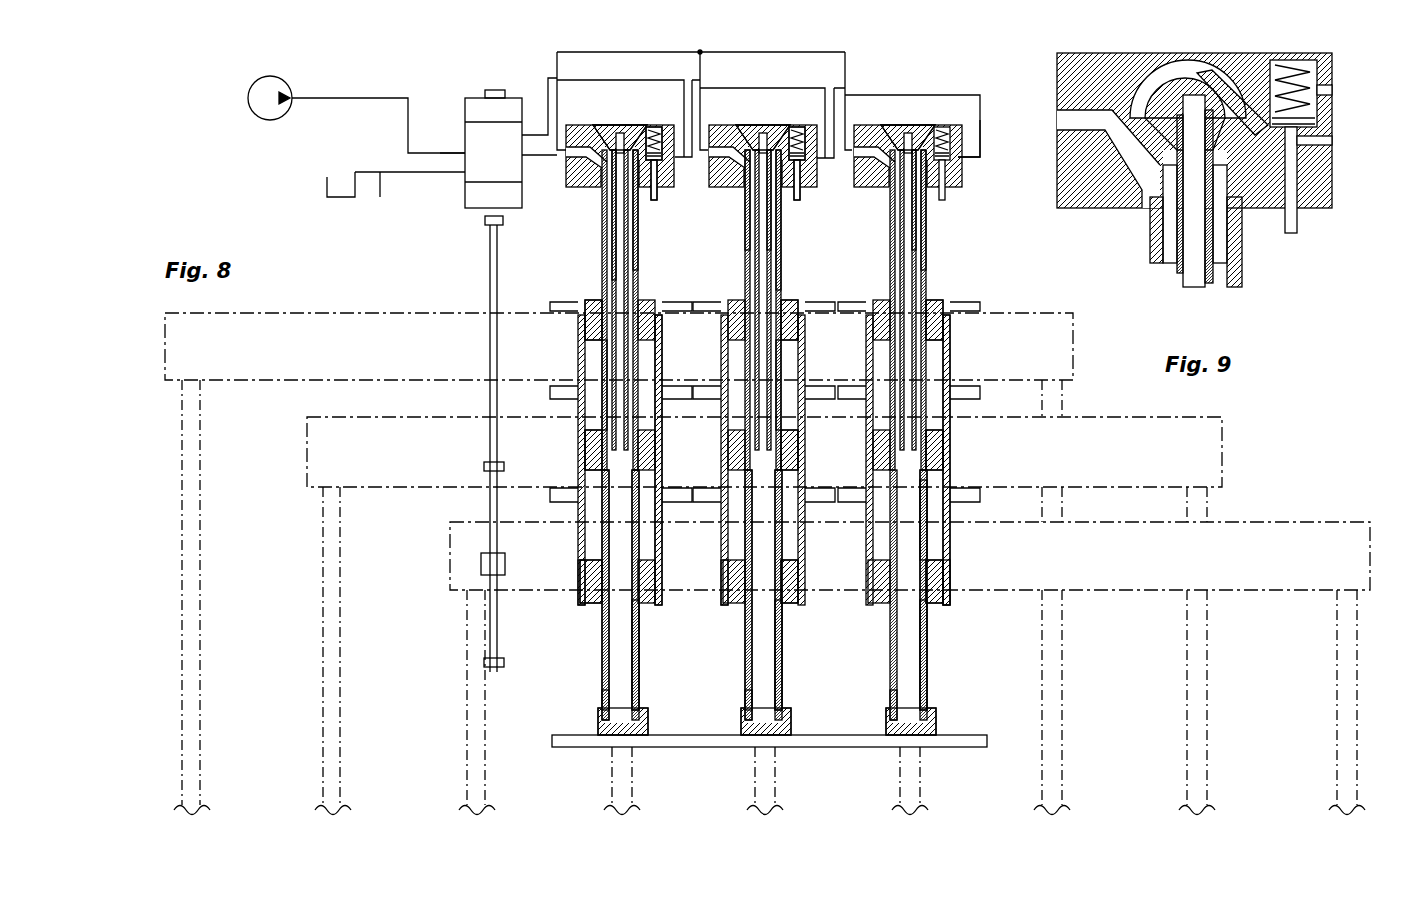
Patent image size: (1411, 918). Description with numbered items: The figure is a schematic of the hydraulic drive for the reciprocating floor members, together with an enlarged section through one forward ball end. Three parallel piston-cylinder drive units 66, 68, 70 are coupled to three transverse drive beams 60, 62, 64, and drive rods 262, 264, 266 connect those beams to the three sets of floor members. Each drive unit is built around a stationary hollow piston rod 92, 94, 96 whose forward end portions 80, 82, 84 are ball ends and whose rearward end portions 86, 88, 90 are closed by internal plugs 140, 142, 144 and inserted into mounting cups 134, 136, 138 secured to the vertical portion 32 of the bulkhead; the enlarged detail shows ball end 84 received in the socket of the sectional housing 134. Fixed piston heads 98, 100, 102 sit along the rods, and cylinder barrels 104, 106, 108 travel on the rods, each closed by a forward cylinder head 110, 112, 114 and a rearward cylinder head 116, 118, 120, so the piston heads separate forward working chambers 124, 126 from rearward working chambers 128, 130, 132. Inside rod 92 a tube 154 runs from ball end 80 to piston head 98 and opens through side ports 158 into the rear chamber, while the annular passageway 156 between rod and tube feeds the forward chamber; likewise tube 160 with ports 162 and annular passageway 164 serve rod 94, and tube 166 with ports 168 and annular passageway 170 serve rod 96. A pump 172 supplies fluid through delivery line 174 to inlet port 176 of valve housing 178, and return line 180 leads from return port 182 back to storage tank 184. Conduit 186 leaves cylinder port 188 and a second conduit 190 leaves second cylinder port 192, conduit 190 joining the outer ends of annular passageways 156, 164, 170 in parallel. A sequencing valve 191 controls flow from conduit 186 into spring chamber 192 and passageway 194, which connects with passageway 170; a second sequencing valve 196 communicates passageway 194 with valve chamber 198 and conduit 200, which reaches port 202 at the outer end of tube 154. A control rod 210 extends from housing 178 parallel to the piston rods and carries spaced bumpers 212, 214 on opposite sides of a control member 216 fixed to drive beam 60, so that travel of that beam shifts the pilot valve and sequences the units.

In FIG. 8, the vertical portion of bulkhead 32 is at (557, 738).
In FIG. 8, the transverse drive beam 60 is at (1310, 520).
In FIG. 8, the second transverse drive beam 62 is at (1212, 440).
In FIG. 8, the third transverse drive beam 64 is at (1075, 367).
In FIG. 8, the first piston-cylinder drive unit 66 is at (936, 277).
In FIG. 8, the second piston-cylinder drive unit 68 is at (745, 278).
In FIG. 8, the third piston-cylinder drive unit 70 is at (558, 263).
In FIG. 8, the forward end portion 80 is at (898, 128).
In FIG. 8, the forward end portion 82 is at (746, 130).
In FIG. 8, the forward end portion 84 is at (603, 135).
In FIG. 9, the forward end portion 84 is at (1168, 68).
In FIG. 8, the rear end portion 86 is at (935, 687).
In FIG. 8, the rear end portion 88 is at (790, 700).
In FIG. 8, the rear end portion 90 is at (657, 693).
In FIG. 8, the piston rod 92 is at (926, 247).
In FIG. 8, the piston rod 94 is at (781, 280).
In FIG. 8, the piston rod 96 is at (638, 258).
In FIG. 9, the piston rod 96 is at (1243, 283).
In FIG. 8, the piston head 98 is at (948, 440).
In FIG. 8, the piston head 100 is at (798, 443).
In FIG. 8, the piston head 102 is at (585, 452).
In FIG. 8, the cylinder barrel 104 is at (942, 571).
In FIG. 8, the cylinder barrel 106 is at (800, 577).
In FIG. 8, the cylinder barrel 108 is at (582, 548).
In FIG. 8, the forward cylinder head 110 is at (945, 321).
In FIG. 8, the forward cylinder head 112 is at (800, 323).
In FIG. 8, the forward cylinder head 114 is at (580, 323).
In FIG. 8, the rearward cylinder head 116 is at (934, 610).
In FIG. 8, the rearward cylinder head 118 is at (750, 604).
In FIG. 8, the rearward cylinder head 120 is at (583, 606).
In FIG. 8, the forward working chamber 124 is at (785, 378).
In FIG. 8, the forward working chamber 126 is at (660, 377).
In FIG. 8, the rearward working chamber 128 is at (937, 537).
In FIG. 8, the rearward working chamber 130 is at (793, 543).
In FIG. 8, the rearward working chamber 132 is at (650, 545).
In FIG. 8, the housing 134 is at (938, 713).
In FIG. 9, the housing 134 is at (1093, 195).
In FIG. 8, the mounting cup 136 is at (741, 712).
In FIG. 8, the mounting cup 138 is at (600, 718).
In FIG. 8, the internal plug 140 is at (930, 683).
In FIG. 8, the internal plug 142 is at (770, 716).
In FIG. 8, the internal plug 144 is at (624, 716).
In FIG. 8, the inner passageway tube 154 is at (916, 221).
In FIG. 9, the inner passageway tube 154 is at (1195, 256).
In FIG. 8, the annular passageway 156 is at (950, 360).
In FIG. 9, the annular passageway 156 is at (1173, 262).
In FIG. 8, the side ports 158 is at (937, 483).
In FIG. 8, the tube 160 is at (755, 222).
In FIG. 8, the side ports 162 is at (775, 490).
In FIG. 8, the annular passageway 164 is at (771, 240).
In FIG. 8, the tube 166 is at (616, 266).
In FIG. 8, the ports 168 is at (592, 522).
In FIG. 8, the annular fluid passageway 170 is at (605, 350).
In FIG. 8, the pump 172 is at (249, 101).
In FIG. 8, the delivery line 174 is at (320, 97).
In FIG. 8, the inlet port 176 is at (465, 148).
In FIG. 8, the valve housing 178 is at (465, 110).
In FIG. 8, the return line 180 is at (391, 176).
In FIG. 8, the return port 182 is at (462, 180).
In FIG. 8, the storage tank 184 is at (327, 190).
In FIG. 8, the conduit 186 is at (582, 78).
In FIG. 9, the conduit 186 is at (1320, 143).
In FIG. 8, the cylinder port 188 is at (537, 125).
In FIG. 9, the cylinder port 188 is at (1243, 70).
In FIG. 8, the second conduit 190 is at (783, 52).
In FIG. 8, the sequencing valve 191 is at (660, 200).
In FIG. 9, the sequencing valve 191 is at (1300, 223).
In FIG. 8, the spring chamber 192 is at (658, 127).
In FIG. 9, the spring chamber 192 is at (1303, 55).
In FIG. 8, the passageway 194 is at (762, 90).
In FIG. 9, the passageway 194 is at (1320, 90).
In FIG. 8, the second sequencing valve 196 is at (806, 206).
In FIG. 8, the valve chamber 198 is at (800, 128).
In FIG. 8, the conduit 200 is at (880, 95).
In FIG. 8, the port 202 is at (957, 178).
In FIG. 8, the control rod 210 is at (490, 345).
In FIG. 8, the bumper 212 is at (484, 466).
In FIG. 8, the bumper 214 is at (484, 664).
In FIG. 8, the control member 216 is at (481, 560).
In FIG. 8, the drive rods 262 is at (483, 738).
In FIG. 8, the drive rods 264 is at (323, 748).
In FIG. 8, the drive rods 266 is at (200, 690).